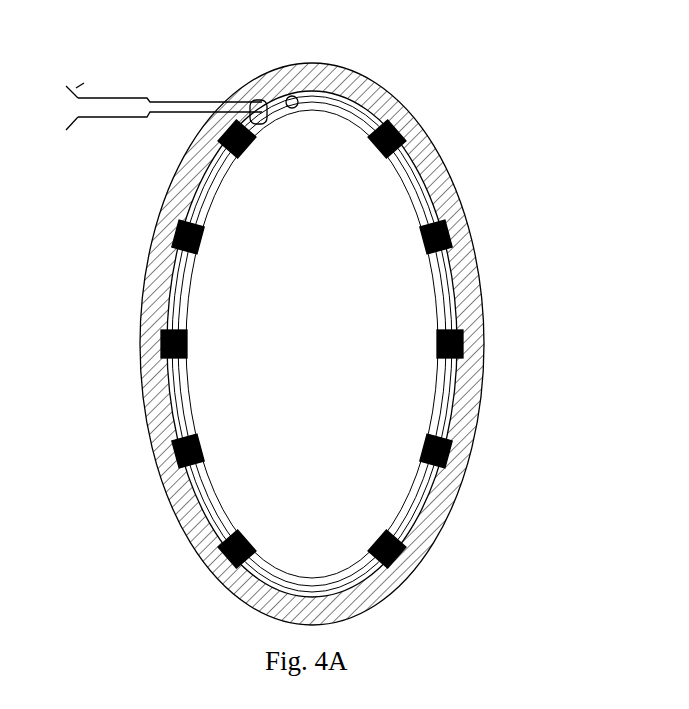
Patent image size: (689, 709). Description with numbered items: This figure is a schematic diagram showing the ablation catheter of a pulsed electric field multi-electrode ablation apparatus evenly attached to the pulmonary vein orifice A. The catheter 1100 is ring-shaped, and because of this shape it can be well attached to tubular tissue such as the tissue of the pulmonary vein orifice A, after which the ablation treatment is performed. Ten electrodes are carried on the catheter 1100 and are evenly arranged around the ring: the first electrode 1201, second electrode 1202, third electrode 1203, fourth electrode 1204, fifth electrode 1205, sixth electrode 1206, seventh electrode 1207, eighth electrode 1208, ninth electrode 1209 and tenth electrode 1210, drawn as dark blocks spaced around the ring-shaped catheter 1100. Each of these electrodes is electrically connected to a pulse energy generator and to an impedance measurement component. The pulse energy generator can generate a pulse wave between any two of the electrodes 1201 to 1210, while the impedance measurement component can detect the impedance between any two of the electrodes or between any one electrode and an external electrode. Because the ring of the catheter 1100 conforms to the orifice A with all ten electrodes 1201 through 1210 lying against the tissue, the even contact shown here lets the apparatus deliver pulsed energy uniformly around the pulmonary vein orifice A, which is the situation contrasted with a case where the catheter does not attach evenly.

The catheter 1100 is at (330, 99).
The pulmonary vein orifice A is at (264, 88).
The first electrode 1201 is at (398, 135).
The second electrode 1202 is at (449, 236).
The third electrode 1203 is at (463, 332).
The fourth electrode 1204 is at (450, 442).
The fifth electrode 1205 is at (400, 555).
The sixth electrode 1206 is at (227, 557).
The seventh electrode 1207 is at (175, 450).
The eighth electrode 1208 is at (160, 345).
The ninth electrode 1209 is at (175, 240).
The tenth electrode 1210 is at (225, 138).